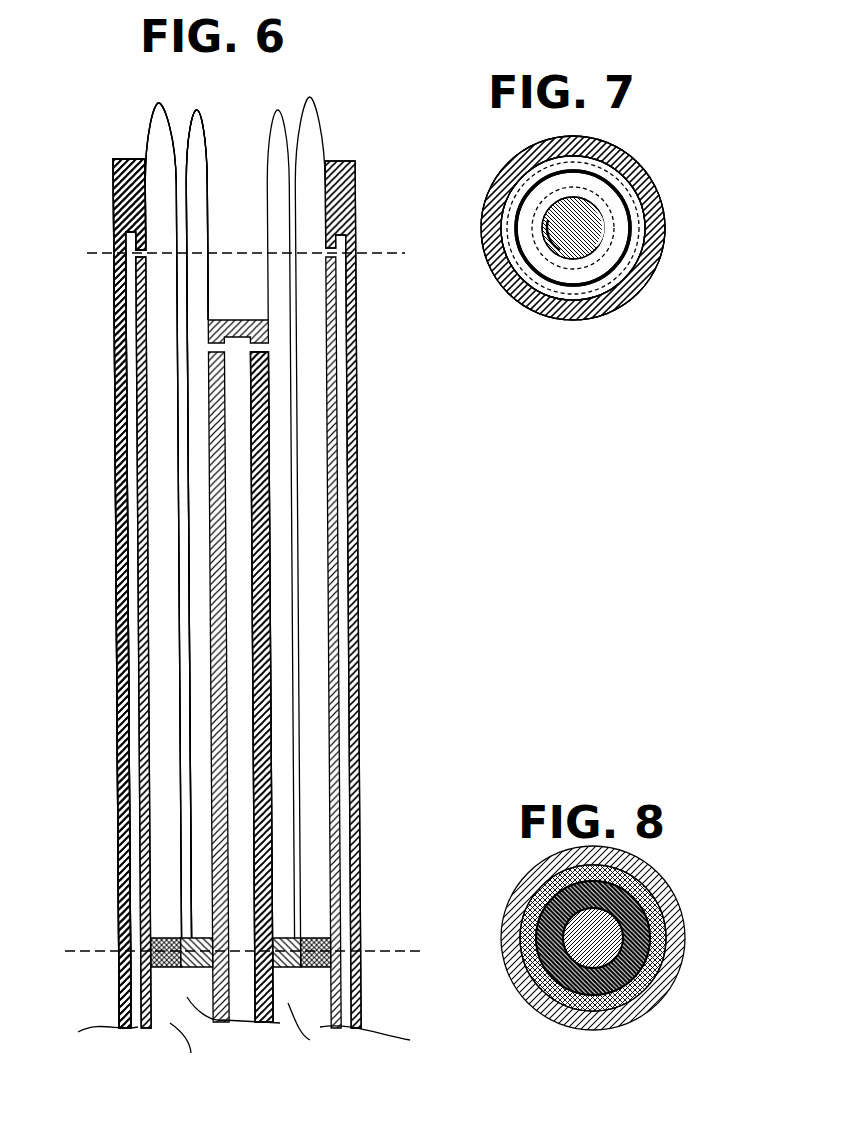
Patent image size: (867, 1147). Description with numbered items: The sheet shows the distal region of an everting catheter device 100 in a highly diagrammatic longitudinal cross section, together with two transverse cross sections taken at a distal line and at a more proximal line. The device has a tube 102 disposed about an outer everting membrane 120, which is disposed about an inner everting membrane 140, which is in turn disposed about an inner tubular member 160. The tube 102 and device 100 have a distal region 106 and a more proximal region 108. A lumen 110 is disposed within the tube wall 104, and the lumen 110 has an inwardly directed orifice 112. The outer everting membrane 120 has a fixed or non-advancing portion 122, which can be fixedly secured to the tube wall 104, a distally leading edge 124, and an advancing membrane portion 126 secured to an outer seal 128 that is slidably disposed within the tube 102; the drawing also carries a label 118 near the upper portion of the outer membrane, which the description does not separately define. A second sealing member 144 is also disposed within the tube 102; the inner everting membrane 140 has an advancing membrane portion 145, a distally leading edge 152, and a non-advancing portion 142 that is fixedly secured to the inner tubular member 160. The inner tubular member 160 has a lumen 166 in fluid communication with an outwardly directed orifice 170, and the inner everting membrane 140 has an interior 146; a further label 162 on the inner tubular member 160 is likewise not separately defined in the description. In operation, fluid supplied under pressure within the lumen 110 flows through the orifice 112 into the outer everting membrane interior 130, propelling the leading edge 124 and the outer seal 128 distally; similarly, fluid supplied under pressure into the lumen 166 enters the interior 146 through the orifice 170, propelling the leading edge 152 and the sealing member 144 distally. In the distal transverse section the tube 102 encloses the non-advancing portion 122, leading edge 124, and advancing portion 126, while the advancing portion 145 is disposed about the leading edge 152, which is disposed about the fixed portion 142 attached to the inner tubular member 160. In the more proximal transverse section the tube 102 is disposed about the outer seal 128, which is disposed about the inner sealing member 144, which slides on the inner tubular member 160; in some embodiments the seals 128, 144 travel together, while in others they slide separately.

In FIG. 6, the everting catheter device 100 is at (305, 64).
In FIG. 6, the tube 102 is at (113, 453).
In FIG. 7, the tube 102 is at (652, 173).
In FIG. 8, the tube 102 is at (665, 873).
In FIG. 6, the tube wall 104 is at (113, 392).
In FIG. 6, the distal region 106 is at (113, 160).
In FIG. 6, the proximal region 108 is at (120, 967).
In FIG. 6, the lumen 110 is at (131, 497).
In FIG. 6, the orifice 112 is at (150, 250).
In FIG. 7, the orifice 112 is at (588, 143).
In FIG. 6, the inner surface 118 is at (240, 205).
In FIG. 6, the outer everting membrane 120 is at (150, 129).
In FIG. 6, the non-advancing portion 122 is at (146, 222).
In FIG. 7, the non-advancing portion 122 is at (615, 305).
In FIG. 6, the distally leading edge 124 is at (158, 104).
In FIG. 7, the distally leading edge 124 is at (630, 265).
In FIG. 6, the advancing membrane portion 126 is at (180, 300).
In FIG. 7, the advancing membrane portion 126 is at (628, 238).
In FIG. 6, the outer seal 128 is at (162, 938).
In FIG. 8, the outer seal 128 is at (600, 940).
In FIG. 6, the outer everting membrane interior 130 is at (162, 560).
In FIG. 6, the inner everting membrane 140 is at (201, 136).
In FIG. 7, the inner everting membrane 140 is at (612, 205).
In FIG. 6, the non-advancing portion 142 is at (210, 326).
In FIG. 7, the non-advancing portion 142 is at (597, 258).
In FIG. 6, the second sealing member 144 is at (186, 960).
In FIG. 8, the second sealing member 144 is at (650, 972).
In FIG. 6, the advancing membrane portion 145 is at (270, 775).
In FIG. 7, the advancing membrane portion 145 is at (631, 226).
In FIG. 6, the interior 146 is at (198, 873).
In FIG. 6, the distally leading edge 152 is at (196, 112).
In FIG. 7, the distally leading edge 152 is at (572, 282).
In FIG. 6, the inner tubular member 160 is at (270, 640).
In FIG. 7, the inner tubular member 160 is at (548, 212).
In FIG. 8, the inner tubular member 160 is at (665, 893).
In FIG. 6, the core rod surface 162 is at (268, 367).
In FIG. 6, the lumen 166 is at (237, 815).
In FIG. 6, the orifice 170 is at (260, 352).
In FIG. 7, the orifice 170 is at (560, 200).